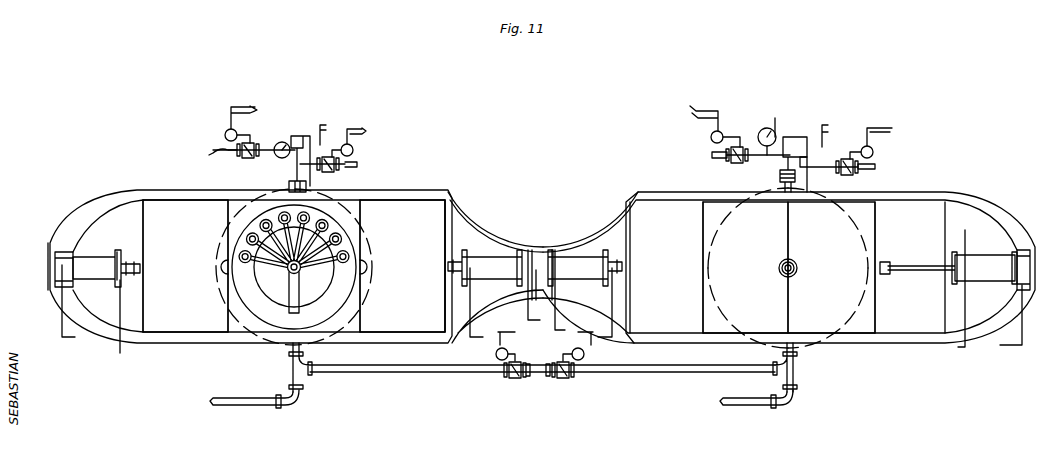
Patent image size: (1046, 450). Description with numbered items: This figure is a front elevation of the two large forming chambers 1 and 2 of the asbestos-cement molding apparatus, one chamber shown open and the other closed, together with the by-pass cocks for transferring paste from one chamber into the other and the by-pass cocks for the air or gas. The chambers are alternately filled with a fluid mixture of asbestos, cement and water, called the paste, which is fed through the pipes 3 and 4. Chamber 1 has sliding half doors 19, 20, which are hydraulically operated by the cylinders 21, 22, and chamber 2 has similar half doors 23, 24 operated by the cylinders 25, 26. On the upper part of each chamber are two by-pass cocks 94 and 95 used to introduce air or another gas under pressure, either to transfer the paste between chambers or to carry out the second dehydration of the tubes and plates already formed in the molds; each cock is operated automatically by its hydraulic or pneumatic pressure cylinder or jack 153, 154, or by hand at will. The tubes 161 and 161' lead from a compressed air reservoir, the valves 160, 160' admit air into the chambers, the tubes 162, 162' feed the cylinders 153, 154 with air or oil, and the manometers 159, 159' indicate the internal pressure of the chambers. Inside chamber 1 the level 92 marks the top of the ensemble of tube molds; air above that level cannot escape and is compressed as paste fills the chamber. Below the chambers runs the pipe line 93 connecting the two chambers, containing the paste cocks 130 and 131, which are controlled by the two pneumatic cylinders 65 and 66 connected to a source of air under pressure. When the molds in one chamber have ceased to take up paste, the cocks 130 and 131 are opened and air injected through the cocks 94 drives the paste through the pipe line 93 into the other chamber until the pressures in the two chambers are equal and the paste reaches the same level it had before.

The forming chamber 1 is at (183, 192).
The forming chamber 2 is at (868, 197).
The pipe 3 is at (228, 401).
The pipe 4 is at (752, 403).
The sliding half door 19 is at (178, 322).
The sliding half door 20 is at (395, 235).
The hydraulic cylinder 21 is at (487, 268).
The hydraulic cylinder 22 is at (88, 257).
The half door 23 is at (832, 310).
The half door 24 is at (740, 305).
The hydraulic cylinder 25 is at (580, 268).
The hydraulic cylinder 26 is at (990, 268).
The pneumatic cylinder 65 is at (495, 355).
The pneumatic cylinder 66 is at (585, 355).
The paste level 92 is at (330, 192).
The pipe line 93 is at (395, 375).
The by-pass cock 94 is at (728, 158).
The by-pass cock 95 is at (243, 160).
The paste cock 130 is at (512, 379).
The paste cock 131 is at (561, 380).
The pressure cylinder 153 is at (711, 137).
The pressure cylinder 154 is at (227, 130).
The manometer 159 is at (756, 127).
The manometer 159' is at (268, 162).
The valve 160 is at (781, 155).
The valve 160' is at (318, 158).
The tube 161 is at (631, 155).
The tube 161' is at (208, 153).
The tube 162 is at (880, 121).
The tube 162' is at (474, 117).